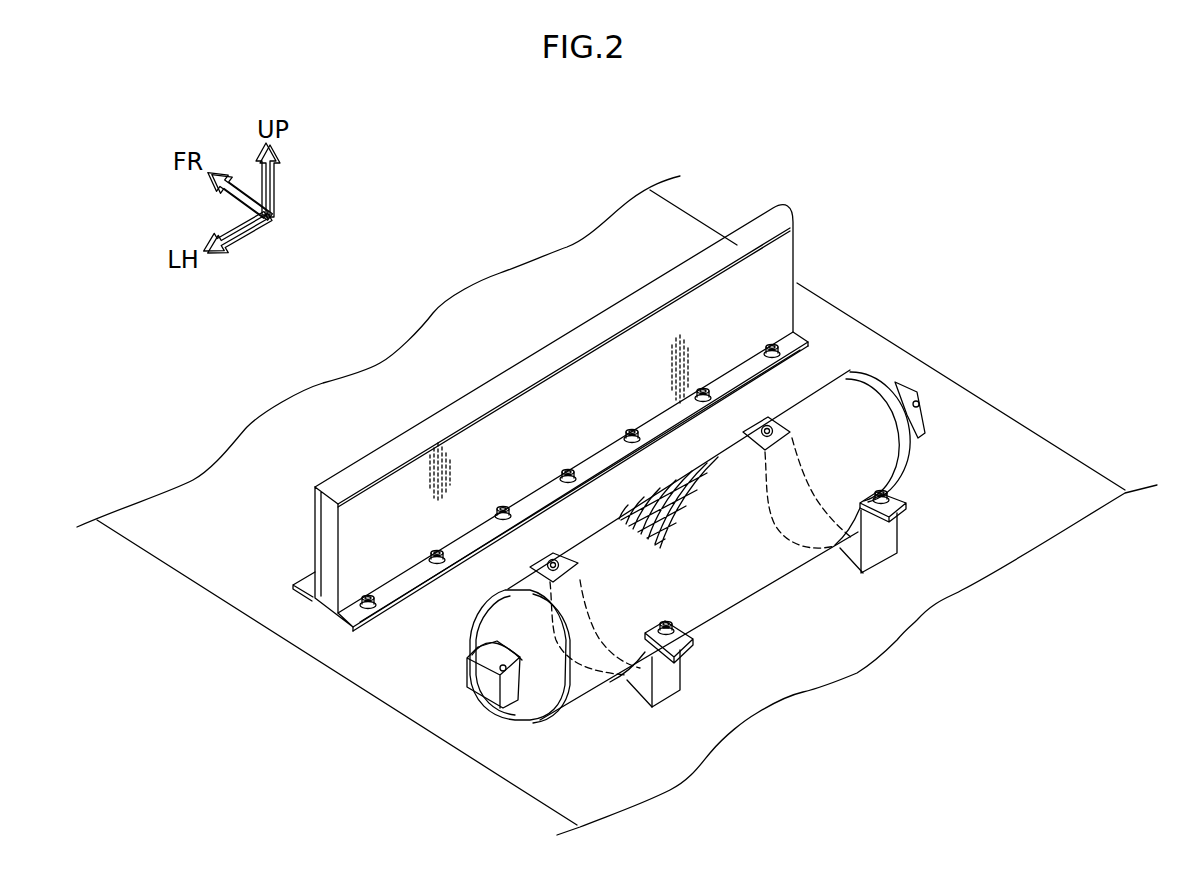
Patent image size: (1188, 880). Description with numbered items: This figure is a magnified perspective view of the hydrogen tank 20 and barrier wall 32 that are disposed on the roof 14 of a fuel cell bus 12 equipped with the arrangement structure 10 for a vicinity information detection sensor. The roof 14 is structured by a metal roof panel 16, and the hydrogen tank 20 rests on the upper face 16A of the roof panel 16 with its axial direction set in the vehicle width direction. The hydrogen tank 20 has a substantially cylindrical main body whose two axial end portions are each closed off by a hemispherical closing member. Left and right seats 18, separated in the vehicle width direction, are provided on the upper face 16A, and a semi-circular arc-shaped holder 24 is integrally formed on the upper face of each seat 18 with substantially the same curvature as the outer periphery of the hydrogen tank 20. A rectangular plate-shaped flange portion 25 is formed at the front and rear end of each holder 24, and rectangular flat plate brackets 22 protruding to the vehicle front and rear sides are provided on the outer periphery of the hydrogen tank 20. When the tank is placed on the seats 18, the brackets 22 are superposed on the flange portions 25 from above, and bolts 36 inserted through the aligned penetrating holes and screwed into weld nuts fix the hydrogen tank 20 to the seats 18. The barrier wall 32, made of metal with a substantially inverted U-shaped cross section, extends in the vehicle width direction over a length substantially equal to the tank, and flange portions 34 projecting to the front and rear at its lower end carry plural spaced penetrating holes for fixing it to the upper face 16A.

The arrangement structure 10 is at (320, 470).
The fuel cell bus 12 is at (822, 243).
The roof 14 is at (858, 318).
The roof panel 16 is at (982, 421).
The upper face 16A is at (1017, 443).
The seat 18 is at (673, 674).
The hydrogen tank 20 is at (532, 702).
The bracket 22 is at (673, 632).
The holder 24 is at (632, 678).
The flange portion 25 is at (694, 650).
The barrier wall 32 is at (505, 439).
The flange portion 34 is at (297, 582).
The bolt 36 is at (507, 505).